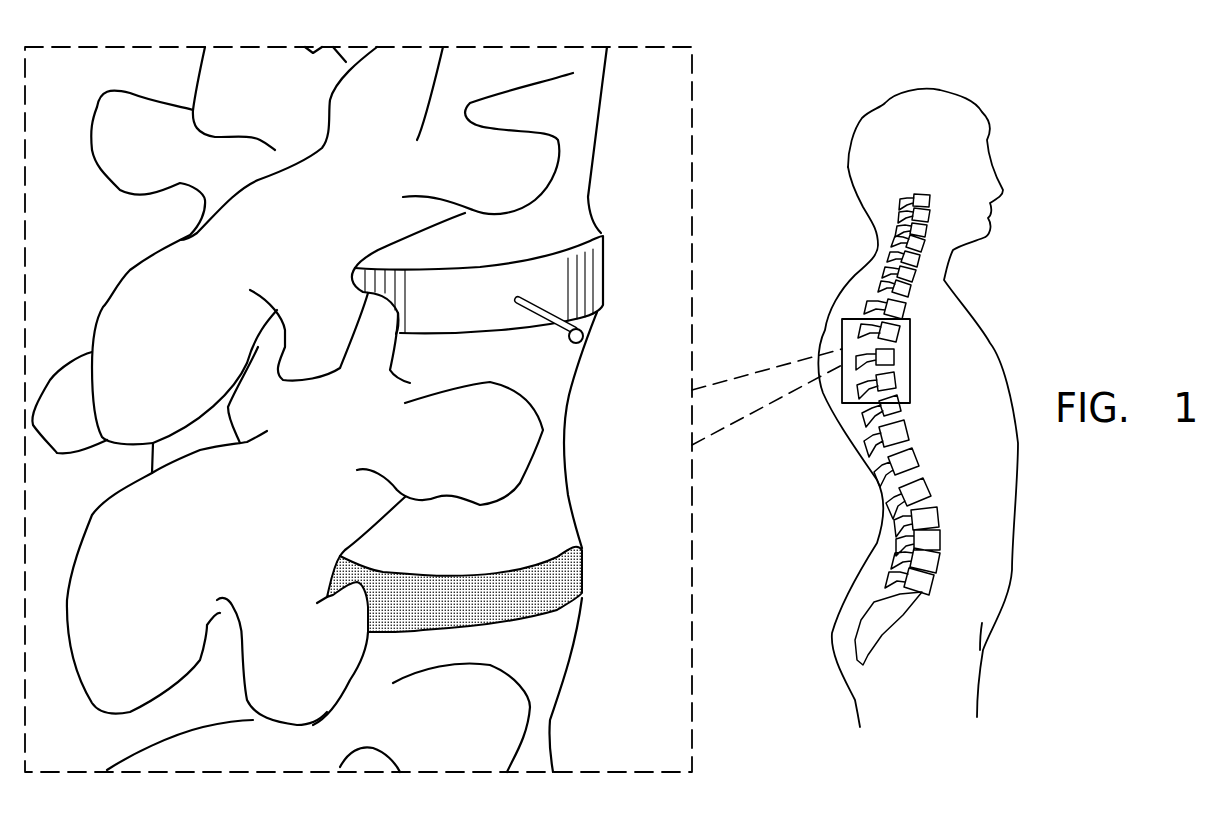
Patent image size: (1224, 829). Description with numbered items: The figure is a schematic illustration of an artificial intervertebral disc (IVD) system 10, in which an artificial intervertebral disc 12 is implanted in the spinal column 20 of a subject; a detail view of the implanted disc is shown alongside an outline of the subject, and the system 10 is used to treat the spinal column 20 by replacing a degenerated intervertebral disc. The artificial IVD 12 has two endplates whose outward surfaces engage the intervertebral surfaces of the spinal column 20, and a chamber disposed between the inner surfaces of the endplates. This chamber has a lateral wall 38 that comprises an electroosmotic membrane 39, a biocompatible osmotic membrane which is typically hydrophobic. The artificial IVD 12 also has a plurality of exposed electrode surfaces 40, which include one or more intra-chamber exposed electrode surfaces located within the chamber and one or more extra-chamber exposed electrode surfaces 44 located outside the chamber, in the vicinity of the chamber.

The artificial intervertebral disc (IVD) system 10 is at (521, 272).
The artificial intervertebral disc (IVD) 12 is at (603, 203).
The spinal column 20 is at (540, 478).
The lateral wall 38 is at (521, 284).
The electroosmotic membrane 39 is at (593, 275).
The exposed electrode surfaces 40 is at (603, 325).
The extra-chamber exposed electrode surfaces 44 is at (584, 333).